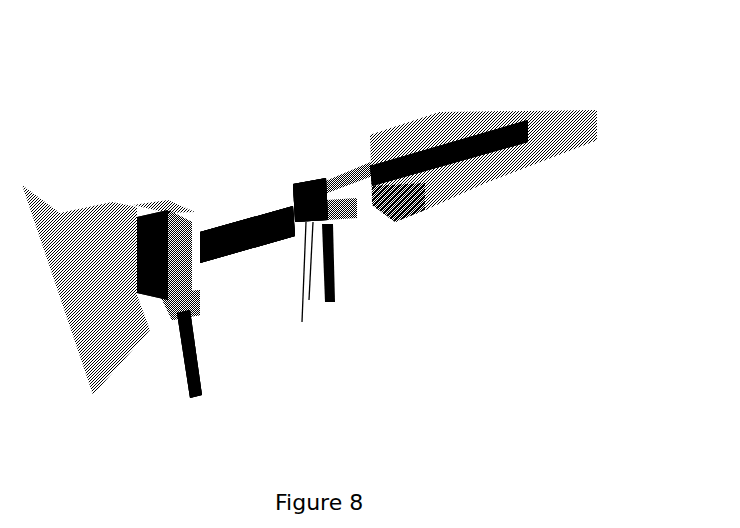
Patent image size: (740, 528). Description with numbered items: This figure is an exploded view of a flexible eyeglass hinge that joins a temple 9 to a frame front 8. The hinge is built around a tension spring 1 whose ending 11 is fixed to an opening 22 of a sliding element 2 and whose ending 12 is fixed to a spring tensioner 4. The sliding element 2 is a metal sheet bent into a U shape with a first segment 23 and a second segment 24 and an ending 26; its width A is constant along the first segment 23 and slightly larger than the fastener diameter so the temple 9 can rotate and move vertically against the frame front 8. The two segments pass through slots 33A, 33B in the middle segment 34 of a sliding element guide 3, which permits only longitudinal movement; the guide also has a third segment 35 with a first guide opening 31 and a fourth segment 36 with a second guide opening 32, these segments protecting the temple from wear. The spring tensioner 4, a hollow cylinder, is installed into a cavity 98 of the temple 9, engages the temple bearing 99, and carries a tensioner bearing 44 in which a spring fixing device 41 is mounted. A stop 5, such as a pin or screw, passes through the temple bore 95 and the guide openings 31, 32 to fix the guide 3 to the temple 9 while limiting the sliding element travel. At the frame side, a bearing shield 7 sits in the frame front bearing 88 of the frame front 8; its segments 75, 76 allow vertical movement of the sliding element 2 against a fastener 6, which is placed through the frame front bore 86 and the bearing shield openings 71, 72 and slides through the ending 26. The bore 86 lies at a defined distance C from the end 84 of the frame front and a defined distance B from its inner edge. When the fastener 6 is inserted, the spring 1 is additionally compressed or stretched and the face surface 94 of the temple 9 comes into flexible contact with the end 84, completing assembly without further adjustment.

The tension spring 1 is at (373, 178).
The sliding element 2 is at (202, 232).
The sliding element guide 3 is at (305, 183).
The spring tensioner 4 is at (480, 132).
The stop 5 is at (330, 302).
The fastener 6 is at (197, 397).
The bearing shield 7 is at (160, 243).
The frame front 8 is at (90, 377).
The temple 9 is at (441, 115).
The ending of the tension spring 11 is at (377, 200).
The ending of the tension spring 12 is at (457, 168).
The opening 22 is at (287, 208).
The first segment 23 is at (253, 248).
The second segment 24 is at (252, 222).
The ending 26 is at (213, 247).
The first guide opening 31 is at (325, 190).
The second guide opening 32 is at (325, 224).
The slot 33A is at (299, 285).
The slot 33B is at (299, 302).
The middle segment 34 is at (312, 190).
The third segment 35 is at (347, 183).
The fourth segment 36 is at (343, 218).
The spring fixing device 41 is at (502, 132).
The tensioner bearing 44 is at (506, 128).
The bearing shield opening 71 is at (163, 300).
The bearing shield opening 72 is at (170, 285).
The segment of the bearing shield 75 is at (193, 262).
The segment of the bearing shield 76 is at (183, 290).
The end of the frame front 84 is at (187, 200).
The frame front bore 86 is at (188, 312).
The frame front bearing 88 is at (181, 302).
The face surface 94 is at (389, 142).
The temple bore 95 is at (395, 193).
The cavity 98 is at (483, 158).
The temple bearing 99 is at (423, 180).
The width A is at (225, 229).
The distance B is at (167, 207).
The distance C is at (167, 213).